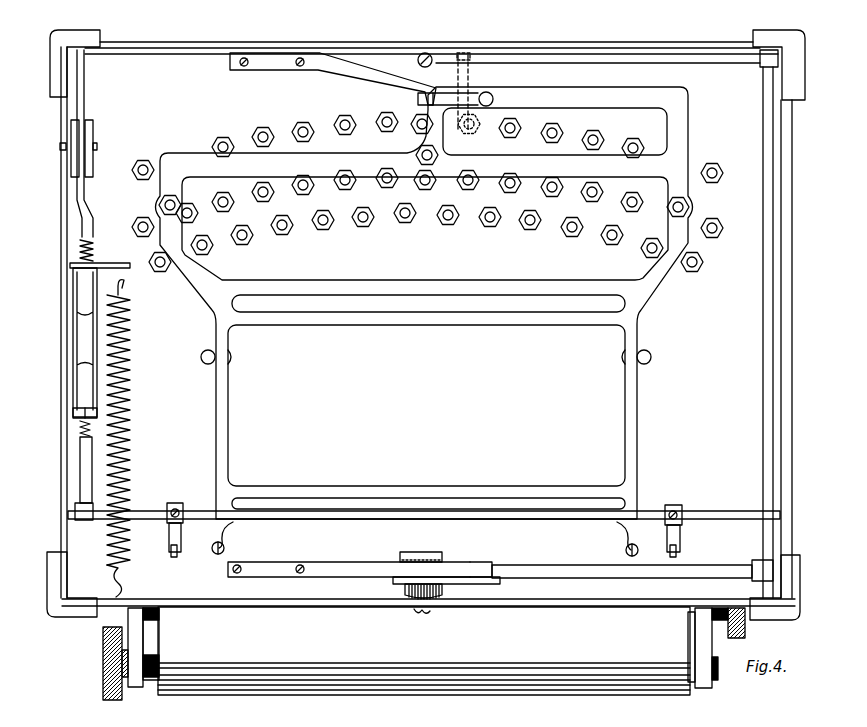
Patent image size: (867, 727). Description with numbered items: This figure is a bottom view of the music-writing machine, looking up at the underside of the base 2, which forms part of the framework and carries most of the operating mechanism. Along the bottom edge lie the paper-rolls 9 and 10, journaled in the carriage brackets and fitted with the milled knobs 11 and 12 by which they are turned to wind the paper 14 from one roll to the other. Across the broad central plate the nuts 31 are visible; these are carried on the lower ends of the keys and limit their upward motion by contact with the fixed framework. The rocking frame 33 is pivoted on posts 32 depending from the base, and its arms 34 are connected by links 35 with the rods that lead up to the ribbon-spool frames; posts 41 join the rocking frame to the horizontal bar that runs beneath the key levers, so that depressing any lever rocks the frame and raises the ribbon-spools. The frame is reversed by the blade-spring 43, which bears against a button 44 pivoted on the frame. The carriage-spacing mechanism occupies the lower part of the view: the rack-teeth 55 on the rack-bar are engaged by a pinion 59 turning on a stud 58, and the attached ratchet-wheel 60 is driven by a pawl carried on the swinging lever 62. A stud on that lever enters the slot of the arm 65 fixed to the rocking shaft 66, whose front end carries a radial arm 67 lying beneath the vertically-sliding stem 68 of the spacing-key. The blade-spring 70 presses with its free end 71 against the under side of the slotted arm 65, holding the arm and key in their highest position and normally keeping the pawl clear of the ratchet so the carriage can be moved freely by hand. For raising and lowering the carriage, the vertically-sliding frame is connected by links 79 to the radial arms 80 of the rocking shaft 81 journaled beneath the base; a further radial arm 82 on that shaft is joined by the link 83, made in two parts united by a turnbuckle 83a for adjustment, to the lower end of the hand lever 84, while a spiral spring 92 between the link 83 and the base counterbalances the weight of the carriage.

The base 2 is at (686, 47).
The upper paper-roll 9 is at (688, 618).
The lower paper-roll 10 is at (681, 694).
The milled knob 11 is at (102, 664).
The milled knob 12 is at (746, 634).
The paper 14 is at (684, 631).
The nut 31 is at (223, 208).
The post 32 is at (200, 356).
The rocking frame 33 is at (371, 318).
The arm 34 is at (229, 523).
The link 35 is at (225, 548).
The post 41 is at (171, 199).
The blade-spring 43 is at (353, 75).
The button 44 is at (452, 100).
The rack-teeth 55 is at (345, 587).
The stud 58 is at (431, 612).
The pinion 59 is at (404, 592).
The ratchet-wheel 60 is at (446, 558).
The swinging lever 62 is at (489, 580).
The slotted arm 65 is at (550, 566).
The rocking shaft 66 is at (766, 533).
The radial arm 67 is at (650, 58).
The vertically-sliding stem 68 is at (426, 52).
The blade-spring 70 is at (343, 568).
The free end of blade-spring 71 is at (482, 569).
The link 79 is at (172, 552).
The radial arm 80 is at (183, 531).
The rocking shaft 81 is at (406, 519).
The radial arm 82 is at (83, 522).
The link 83 is at (80, 473).
The turnbuckle 83a is at (82, 342).
The lever 84 is at (70, 153).
The spiral spring 92 is at (130, 430).